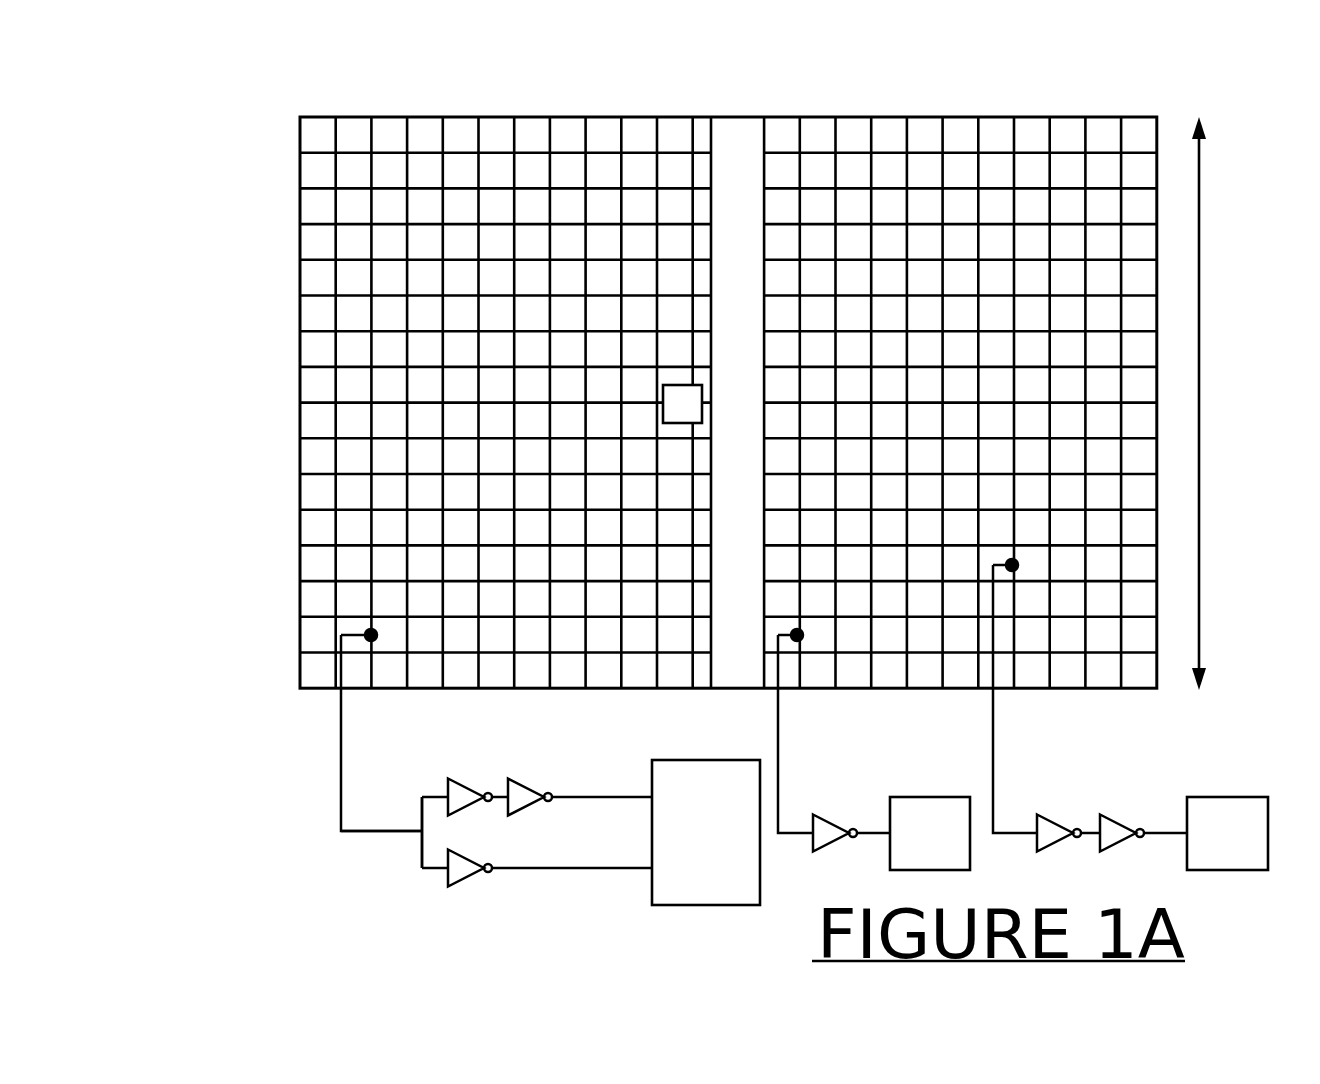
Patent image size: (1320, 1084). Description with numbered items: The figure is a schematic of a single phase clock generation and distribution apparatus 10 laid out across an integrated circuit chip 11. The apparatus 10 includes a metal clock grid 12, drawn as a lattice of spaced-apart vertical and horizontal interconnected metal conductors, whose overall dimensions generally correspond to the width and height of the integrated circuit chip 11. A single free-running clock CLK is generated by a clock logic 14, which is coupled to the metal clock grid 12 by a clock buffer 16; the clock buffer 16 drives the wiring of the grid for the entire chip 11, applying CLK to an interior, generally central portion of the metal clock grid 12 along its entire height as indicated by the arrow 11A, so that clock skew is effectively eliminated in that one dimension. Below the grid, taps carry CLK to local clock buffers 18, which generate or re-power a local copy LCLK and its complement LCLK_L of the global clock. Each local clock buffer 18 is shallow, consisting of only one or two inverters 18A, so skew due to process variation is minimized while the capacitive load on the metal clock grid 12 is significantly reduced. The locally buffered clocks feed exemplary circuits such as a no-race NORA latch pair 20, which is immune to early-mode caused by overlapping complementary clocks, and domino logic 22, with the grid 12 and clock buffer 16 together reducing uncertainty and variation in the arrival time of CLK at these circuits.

The single phase clock generation and distribution apparatus 10 is at (853, 95).
The integrated circuit chip 11 is at (990, 130).
The arrow 11A is at (1199, 418).
The metal clock grid 12 is at (312, 243).
The clock logic 14 is at (682, 404).
The clock buffer 16 is at (737, 402).
The local clock buffer 18 is at (546, 898).
The inverter 18A is at (797, 843).
The NORA latch pair 20 is at (706, 832).
The domino logic 22 is at (1079, 833).